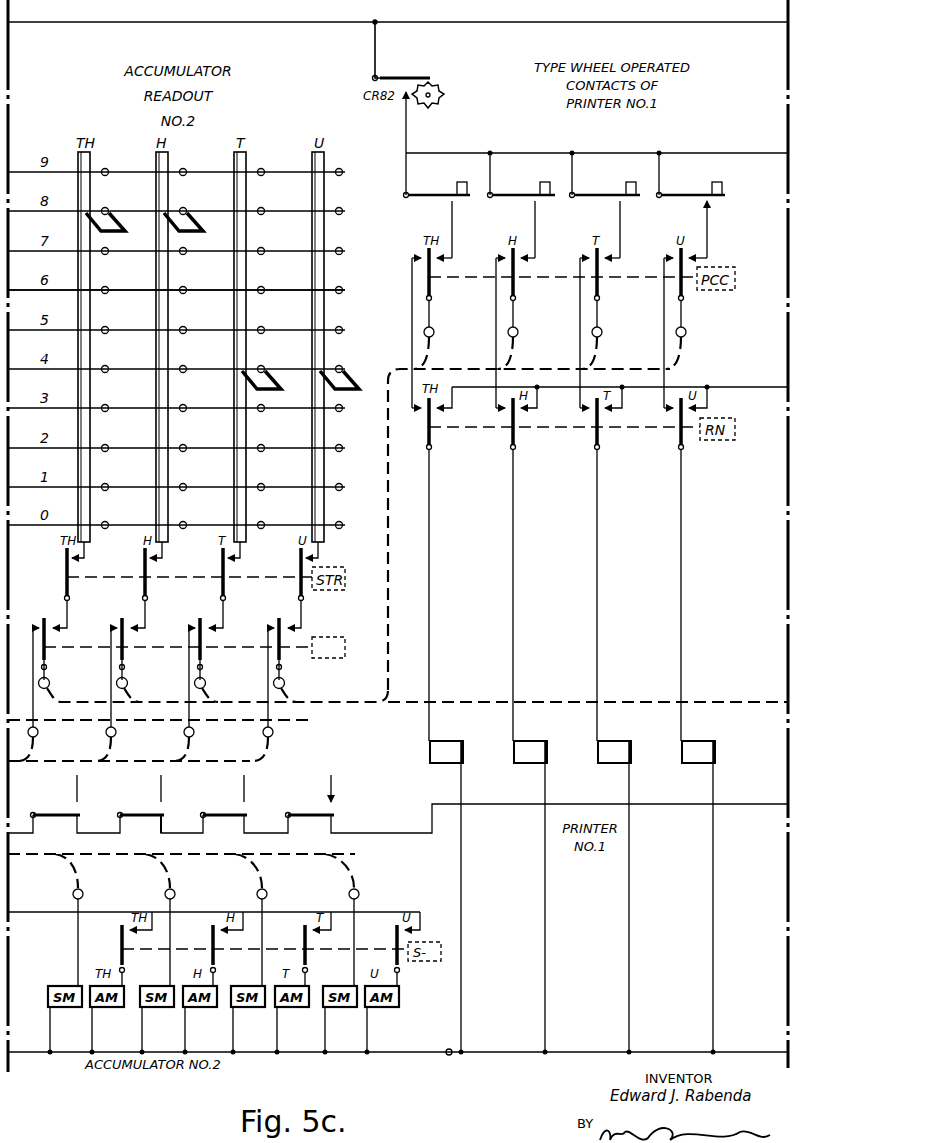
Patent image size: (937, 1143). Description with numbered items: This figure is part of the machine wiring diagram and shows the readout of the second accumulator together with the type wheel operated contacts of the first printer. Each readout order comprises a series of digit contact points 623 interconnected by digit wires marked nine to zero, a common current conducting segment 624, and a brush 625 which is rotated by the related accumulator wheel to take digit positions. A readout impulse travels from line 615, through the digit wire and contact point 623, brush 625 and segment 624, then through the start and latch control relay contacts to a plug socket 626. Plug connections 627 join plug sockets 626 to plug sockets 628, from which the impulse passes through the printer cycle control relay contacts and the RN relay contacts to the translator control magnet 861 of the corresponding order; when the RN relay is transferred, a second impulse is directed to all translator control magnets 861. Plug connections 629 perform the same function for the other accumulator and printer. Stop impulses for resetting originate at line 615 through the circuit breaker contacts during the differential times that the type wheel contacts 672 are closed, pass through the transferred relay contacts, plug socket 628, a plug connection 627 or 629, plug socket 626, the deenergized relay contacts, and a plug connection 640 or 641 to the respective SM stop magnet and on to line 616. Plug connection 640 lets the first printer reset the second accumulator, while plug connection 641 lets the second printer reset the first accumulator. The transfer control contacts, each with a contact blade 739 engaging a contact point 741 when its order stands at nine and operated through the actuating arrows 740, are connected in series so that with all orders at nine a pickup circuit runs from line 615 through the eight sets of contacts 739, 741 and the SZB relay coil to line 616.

The line 615 is at (486, 22).
The line 616 is at (447, 1054).
The digit contact points 623 is at (182, 210).
The common current conducting segment 624 is at (88, 306).
The brush 625 is at (336, 389).
The plug socket 626 is at (276, 680).
The plug connections 627 is at (390, 538).
The plug socket 628 is at (677, 329).
The plug connections 629 is at (758, 700).
The plug connection 640 is at (228, 856).
The plug connection 641 is at (244, 762).
The type wheel contacts 672 is at (706, 199).
The contact blade 739 is at (144, 824).
The switch actuator arrows 740 is at (158, 798).
The contact point 741 is at (316, 820).
The translator control magnet 861 is at (686, 752).